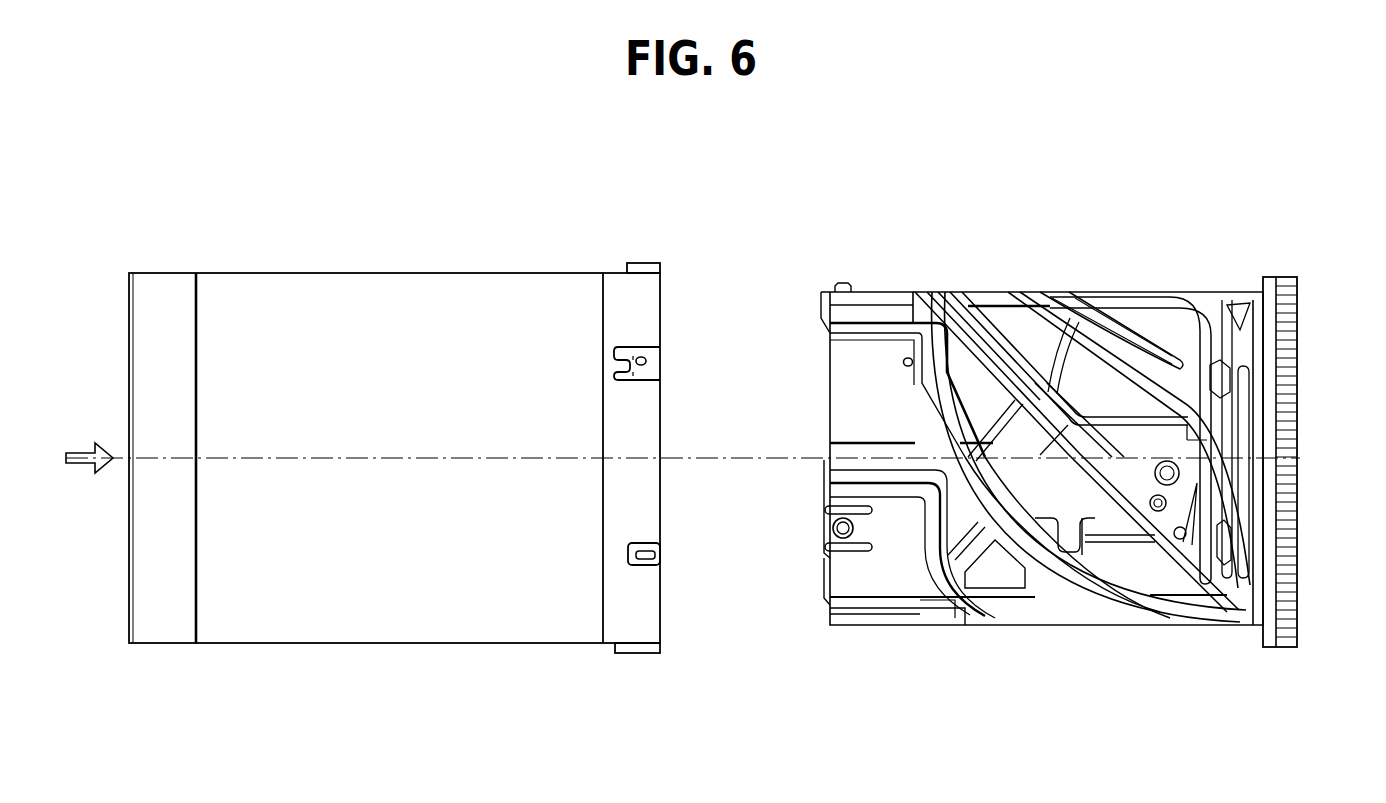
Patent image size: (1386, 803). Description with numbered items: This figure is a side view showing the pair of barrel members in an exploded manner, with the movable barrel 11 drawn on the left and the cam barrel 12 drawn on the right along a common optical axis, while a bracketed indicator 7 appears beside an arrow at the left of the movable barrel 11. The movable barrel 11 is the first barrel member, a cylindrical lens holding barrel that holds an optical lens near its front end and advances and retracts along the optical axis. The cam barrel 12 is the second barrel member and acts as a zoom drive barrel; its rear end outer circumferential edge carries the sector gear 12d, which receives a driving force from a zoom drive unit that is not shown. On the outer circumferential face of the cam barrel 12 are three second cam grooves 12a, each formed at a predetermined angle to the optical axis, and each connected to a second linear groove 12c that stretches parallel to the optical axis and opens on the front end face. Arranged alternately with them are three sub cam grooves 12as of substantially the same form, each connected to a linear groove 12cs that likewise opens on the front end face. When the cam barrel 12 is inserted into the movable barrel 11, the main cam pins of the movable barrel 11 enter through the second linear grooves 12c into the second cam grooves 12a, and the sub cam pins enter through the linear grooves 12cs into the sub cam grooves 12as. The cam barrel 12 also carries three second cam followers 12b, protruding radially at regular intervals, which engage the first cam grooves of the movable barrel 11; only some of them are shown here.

The viewing direction indicator 7 is at (83, 463).
The movable barrel 11 is at (392, 285).
The cam barrel 12 is at (1070, 463).
The second cam grooves 12a is at (968, 627).
The sub cam grooves 12as is at (942, 410).
The second cam followers 12b is at (826, 545).
The second linear groove 12c is at (878, 487).
The linear groove 12cs is at (880, 322).
The sector gear 12d is at (1296, 327).